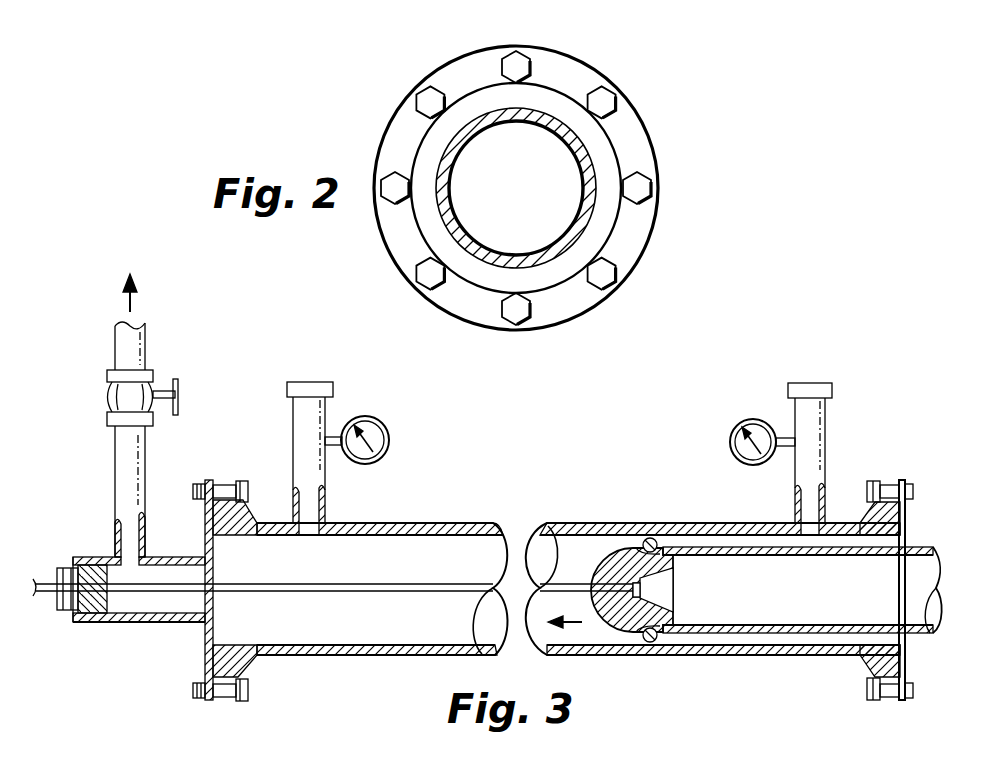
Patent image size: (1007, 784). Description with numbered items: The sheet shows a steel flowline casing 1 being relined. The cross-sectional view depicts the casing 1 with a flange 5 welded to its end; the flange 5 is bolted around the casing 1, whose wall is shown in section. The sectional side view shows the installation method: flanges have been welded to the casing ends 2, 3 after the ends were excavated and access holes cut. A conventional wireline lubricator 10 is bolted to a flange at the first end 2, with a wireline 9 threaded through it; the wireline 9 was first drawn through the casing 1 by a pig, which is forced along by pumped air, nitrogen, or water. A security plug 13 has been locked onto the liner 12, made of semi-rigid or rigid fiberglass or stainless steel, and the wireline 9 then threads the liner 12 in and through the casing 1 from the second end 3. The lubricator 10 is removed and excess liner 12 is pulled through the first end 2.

In FIG. 2, the steel casing 1 is at (587, 227).
In FIG. 3, the steel casing 1 is at (448, 523).
In FIG. 3, the end of casing 2 is at (252, 663).
In FIG. 3, the end of casing 3 is at (867, 663).
In FIG. 2, the flange 5 is at (642, 128).
In FIG. 3, the wireline 9 is at (330, 594).
In FIG. 3, the wireline lubricator 10 is at (102, 604).
In FIG. 3, the liner 12 is at (737, 547).
In FIG. 3, the security plug 13 is at (592, 552).